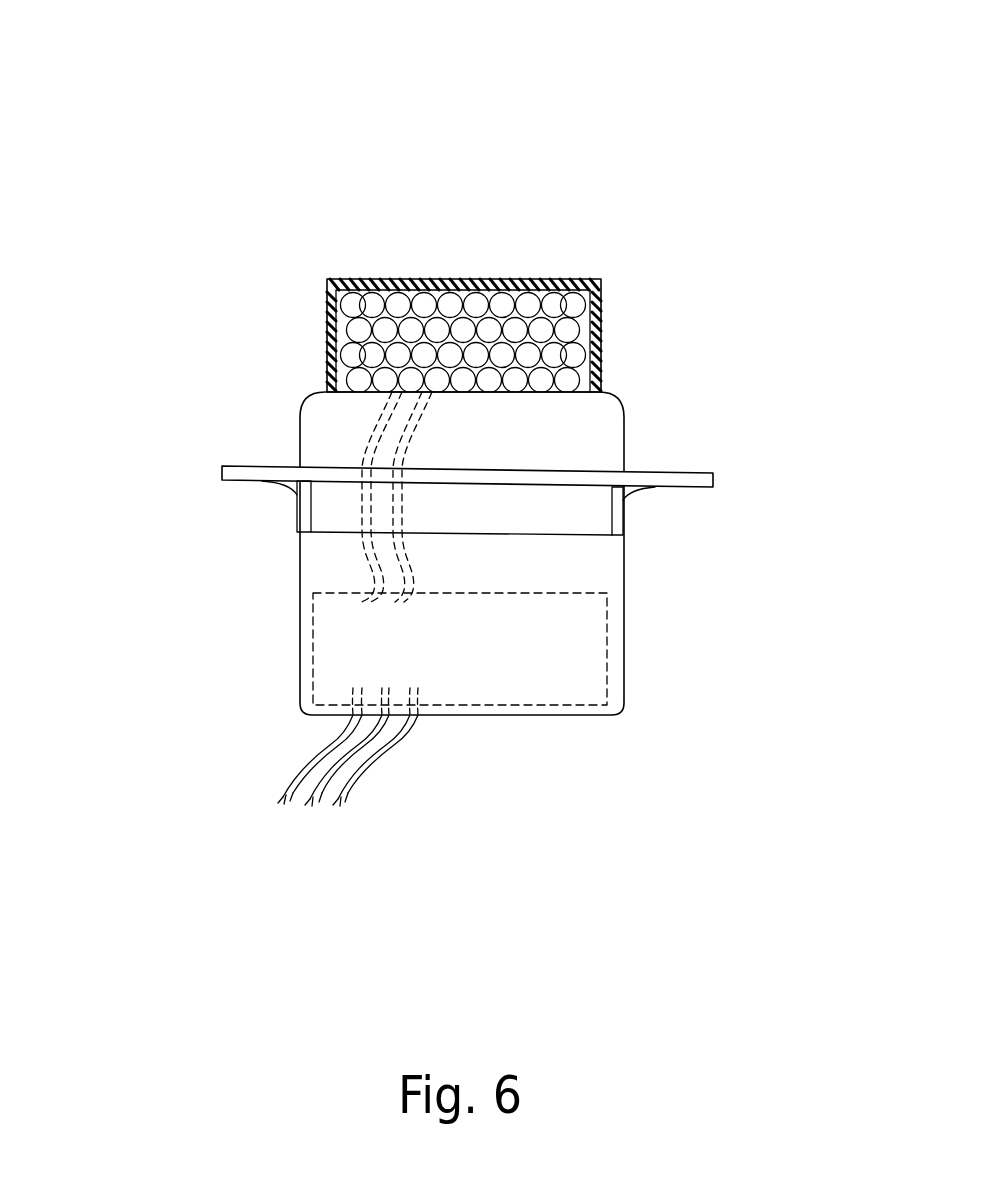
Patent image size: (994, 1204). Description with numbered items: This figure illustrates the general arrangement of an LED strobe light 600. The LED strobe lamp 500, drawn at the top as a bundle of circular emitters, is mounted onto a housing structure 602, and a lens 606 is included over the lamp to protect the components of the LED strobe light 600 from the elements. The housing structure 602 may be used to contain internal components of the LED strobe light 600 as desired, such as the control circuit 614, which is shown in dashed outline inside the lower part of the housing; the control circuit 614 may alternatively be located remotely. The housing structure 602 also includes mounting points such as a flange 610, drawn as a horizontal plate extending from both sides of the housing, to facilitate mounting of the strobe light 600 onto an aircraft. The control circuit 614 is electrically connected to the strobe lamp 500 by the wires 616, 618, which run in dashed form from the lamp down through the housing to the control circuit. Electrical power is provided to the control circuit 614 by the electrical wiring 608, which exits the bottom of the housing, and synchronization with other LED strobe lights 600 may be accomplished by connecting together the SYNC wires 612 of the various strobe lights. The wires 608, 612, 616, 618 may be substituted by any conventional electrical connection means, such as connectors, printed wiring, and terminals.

The LED strobe light 600 is at (193, 150).
The LED strobe lamp 500 is at (578, 332).
The housing structure 602 is at (625, 449).
The lens 606 is at (328, 363).
The flange 610 is at (222, 473).
The control circuit 614 is at (607, 688).
The wire 616 is at (366, 558).
The wire 618 is at (411, 572).
The electrical wiring 608 is at (295, 775).
The SYNC wires 612 is at (370, 768).